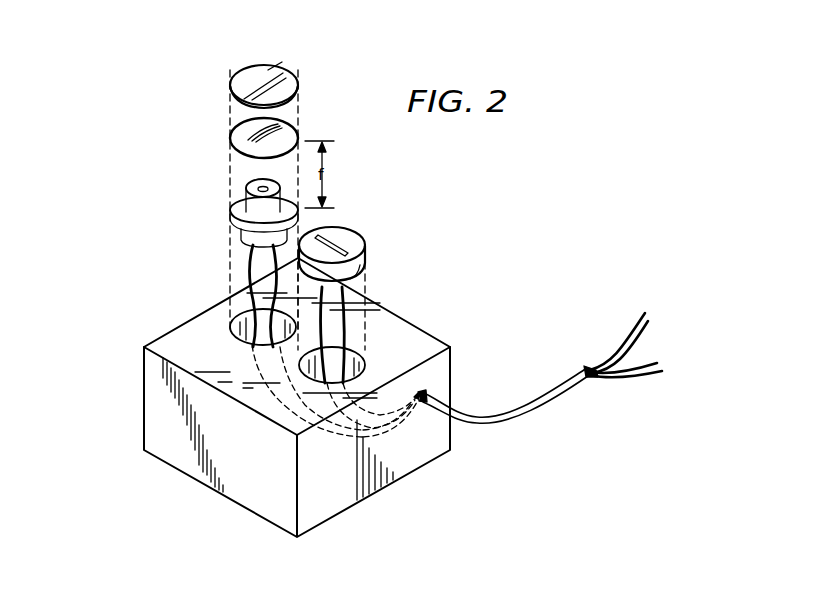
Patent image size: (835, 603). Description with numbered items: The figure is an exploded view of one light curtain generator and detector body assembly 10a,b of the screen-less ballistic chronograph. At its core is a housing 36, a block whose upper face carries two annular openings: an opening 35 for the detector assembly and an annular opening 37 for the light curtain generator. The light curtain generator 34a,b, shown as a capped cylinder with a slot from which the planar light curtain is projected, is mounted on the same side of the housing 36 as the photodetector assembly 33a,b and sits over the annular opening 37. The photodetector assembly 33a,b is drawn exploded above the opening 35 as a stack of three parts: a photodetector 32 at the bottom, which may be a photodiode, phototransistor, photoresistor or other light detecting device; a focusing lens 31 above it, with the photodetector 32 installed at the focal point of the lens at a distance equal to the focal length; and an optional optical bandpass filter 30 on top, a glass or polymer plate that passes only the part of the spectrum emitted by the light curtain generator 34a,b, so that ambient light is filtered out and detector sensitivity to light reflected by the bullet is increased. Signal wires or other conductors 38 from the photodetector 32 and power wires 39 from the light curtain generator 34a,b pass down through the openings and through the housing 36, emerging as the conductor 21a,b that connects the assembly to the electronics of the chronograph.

The light curtain generator and detector body assembly 10a,b is at (143, 399).
The conductor 21a,b is at (545, 395).
The optical bandpass filter 30 is at (240, 82).
The focusing lens 31 is at (238, 139).
The photodetector 32 is at (255, 210).
The photodetector assembly 33a,b is at (160, 43).
The light curtain generator 34a,b is at (358, 265).
The opening for detector assembly 35 is at (225, 333).
The housing 36 is at (436, 368).
The annular opening for light curtain generator 37 is at (363, 370).
The signal wires 38 is at (248, 272).
The power wires 39 is at (340, 328).